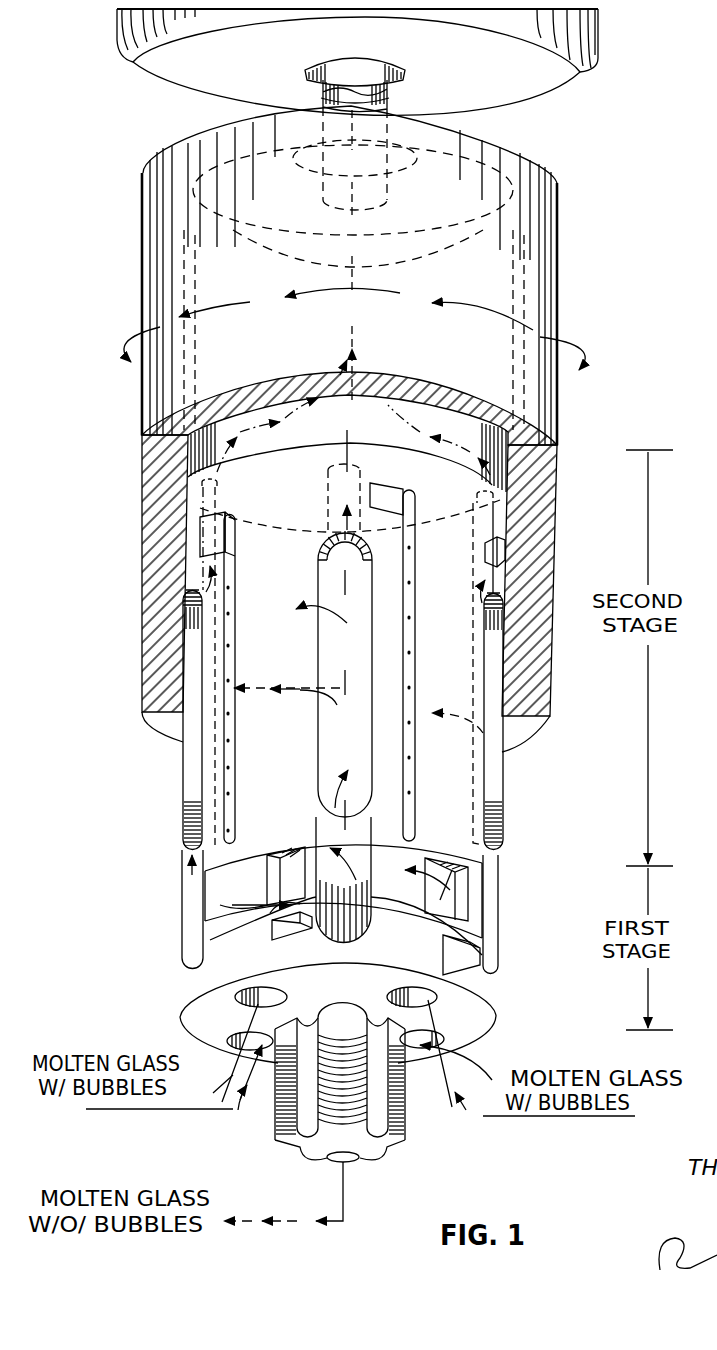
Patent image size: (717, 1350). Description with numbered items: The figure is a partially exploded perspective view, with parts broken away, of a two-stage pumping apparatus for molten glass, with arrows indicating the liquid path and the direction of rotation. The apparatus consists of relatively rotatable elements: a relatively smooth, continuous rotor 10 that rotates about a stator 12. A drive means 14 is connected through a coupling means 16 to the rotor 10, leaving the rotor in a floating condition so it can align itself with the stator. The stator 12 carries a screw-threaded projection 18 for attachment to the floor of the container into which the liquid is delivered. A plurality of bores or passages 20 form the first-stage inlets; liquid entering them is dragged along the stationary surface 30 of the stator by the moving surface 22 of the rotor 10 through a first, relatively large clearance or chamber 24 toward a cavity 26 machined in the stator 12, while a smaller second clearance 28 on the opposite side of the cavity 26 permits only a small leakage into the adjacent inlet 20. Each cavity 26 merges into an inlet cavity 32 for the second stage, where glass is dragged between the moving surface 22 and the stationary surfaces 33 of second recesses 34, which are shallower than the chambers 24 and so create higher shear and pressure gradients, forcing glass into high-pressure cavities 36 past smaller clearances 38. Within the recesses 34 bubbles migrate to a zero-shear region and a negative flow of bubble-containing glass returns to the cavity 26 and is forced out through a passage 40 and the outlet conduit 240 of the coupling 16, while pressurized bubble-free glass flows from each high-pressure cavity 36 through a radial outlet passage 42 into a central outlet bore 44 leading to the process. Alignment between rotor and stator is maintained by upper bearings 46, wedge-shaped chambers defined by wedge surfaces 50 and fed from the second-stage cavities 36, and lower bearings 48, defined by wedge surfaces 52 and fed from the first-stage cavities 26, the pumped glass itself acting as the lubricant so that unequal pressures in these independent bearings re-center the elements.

The rotor 10 is at (556, 478).
The stator 12 is at (284, 455).
The drive means 14 is at (553, 90).
The coupling means 16 is at (318, 96).
The outlet conduit 240 is at (390, 104).
The screw-threaded projection 18 is at (407, 1118).
The bores or passages 20 is at (240, 1040).
The moving surface 22 is at (410, 400).
The first clearance or chamber 24 is at (412, 866).
The cavity 26 is at (370, 834).
The second clearance 28 is at (311, 853).
The stationary surface 30 is at (383, 886).
The inlet cavity 32 is at (369, 707).
The stationary surfaces 33 is at (284, 733).
The recess 34 is at (450, 560).
The high-pressure cavity 36 is at (421, 627).
The clearances 38 is at (395, 517).
The passage 40 is at (326, 496).
The radial outlet passage 42 is at (410, 563).
The central outlet bore 44 is at (346, 1166).
The upper bearings 46 is at (204, 514).
The lower bearings 48 is at (268, 935).
The wedge surfaces 50 is at (246, 533).
The wedge surfaces 52 is at (300, 940).